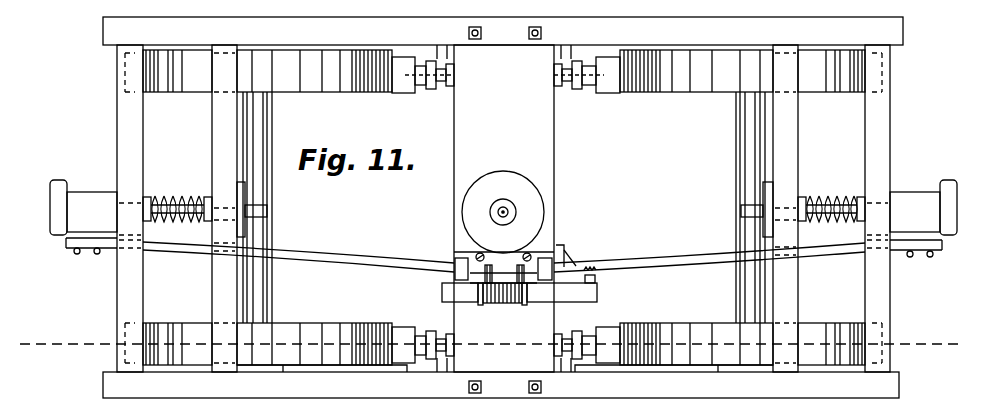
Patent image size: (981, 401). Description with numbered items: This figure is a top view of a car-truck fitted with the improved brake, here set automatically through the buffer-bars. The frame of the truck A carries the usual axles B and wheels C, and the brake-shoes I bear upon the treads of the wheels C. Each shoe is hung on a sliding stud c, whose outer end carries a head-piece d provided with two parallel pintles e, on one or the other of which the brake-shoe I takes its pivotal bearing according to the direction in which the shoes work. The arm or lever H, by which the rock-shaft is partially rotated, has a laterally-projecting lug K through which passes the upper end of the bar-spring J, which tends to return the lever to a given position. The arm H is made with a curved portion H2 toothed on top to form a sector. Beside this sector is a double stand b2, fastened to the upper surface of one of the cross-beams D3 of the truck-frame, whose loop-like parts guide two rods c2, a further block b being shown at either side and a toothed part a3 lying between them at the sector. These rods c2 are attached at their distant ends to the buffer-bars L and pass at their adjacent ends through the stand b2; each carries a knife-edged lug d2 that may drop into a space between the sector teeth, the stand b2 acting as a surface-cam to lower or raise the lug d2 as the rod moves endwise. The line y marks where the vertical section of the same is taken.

The frame of car-truck A is at (503, 204).
The wheels C is at (504, 211).
The brake-shoes I is at (506, 210).
The pintles or arbors e is at (429, 67).
The head-piece or bearer d is at (579, 67).
The sliding shaft or stud c is at (566, 86).
The cross-beam of truck-frame D3 is at (510, 176).
The blocks b is at (503, 270).
The double stand b2 is at (503, 257).
The curved portion of arm H2 is at (519, 292).
The hatched slide a3 is at (502, 302).
The lug or short stud d2 is at (526, 318).
The arm or lever H is at (596, 290).
The bar-spring J is at (565, 272).
The lug of arm K is at (594, 267).
The rods c2 is at (504, 256).
The buffer-bars or bumpers L is at (503, 218).
The axles B is at (237, 308).
The section line y is at (483, 345).